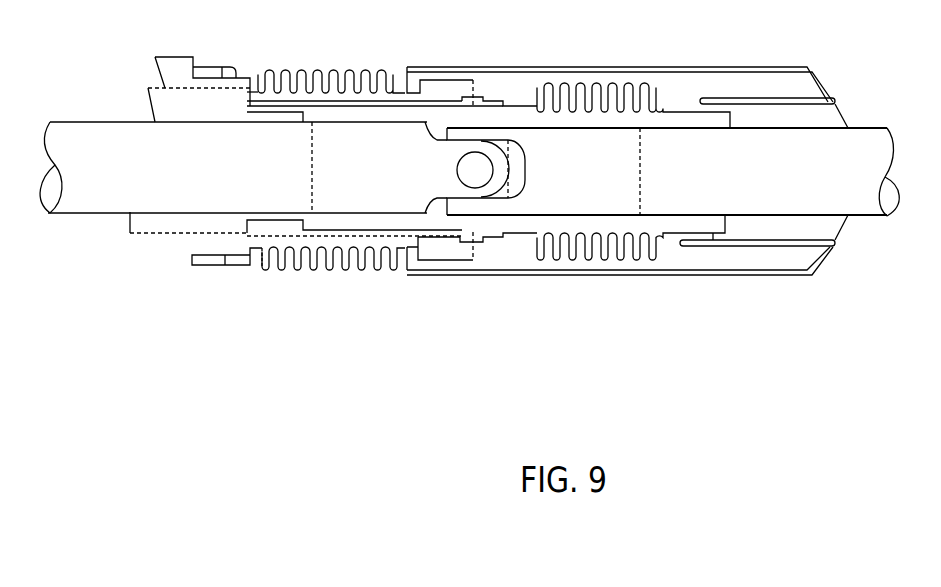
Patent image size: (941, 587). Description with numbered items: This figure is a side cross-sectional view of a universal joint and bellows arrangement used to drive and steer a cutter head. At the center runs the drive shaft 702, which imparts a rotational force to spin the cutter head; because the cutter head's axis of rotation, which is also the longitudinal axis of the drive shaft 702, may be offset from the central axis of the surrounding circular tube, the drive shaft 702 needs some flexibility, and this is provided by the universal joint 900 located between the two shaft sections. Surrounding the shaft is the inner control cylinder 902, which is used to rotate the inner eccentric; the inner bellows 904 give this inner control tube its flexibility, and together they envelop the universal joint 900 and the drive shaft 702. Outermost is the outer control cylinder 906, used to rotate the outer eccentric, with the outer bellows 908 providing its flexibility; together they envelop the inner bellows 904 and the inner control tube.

The drive shaft 702 is at (193, 176).
The universal joint 900 is at (383, 176).
The outer bellows 908 is at (372, 70).
The outer control cylinder 906 is at (590, 67).
The inner bellows 904 is at (668, 84).
The inner control cylinder 902 is at (837, 99).